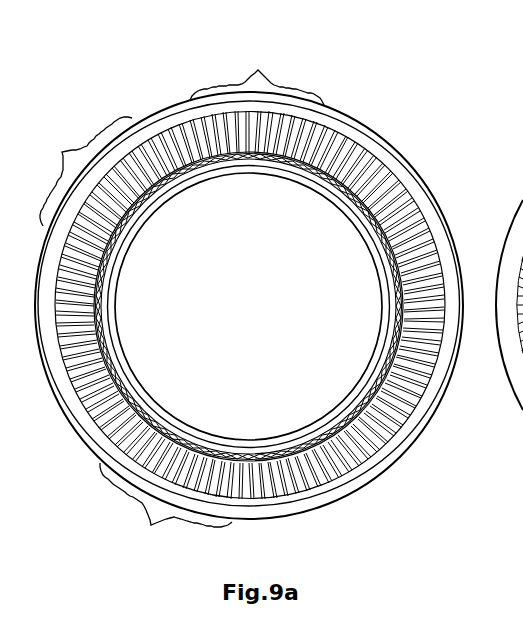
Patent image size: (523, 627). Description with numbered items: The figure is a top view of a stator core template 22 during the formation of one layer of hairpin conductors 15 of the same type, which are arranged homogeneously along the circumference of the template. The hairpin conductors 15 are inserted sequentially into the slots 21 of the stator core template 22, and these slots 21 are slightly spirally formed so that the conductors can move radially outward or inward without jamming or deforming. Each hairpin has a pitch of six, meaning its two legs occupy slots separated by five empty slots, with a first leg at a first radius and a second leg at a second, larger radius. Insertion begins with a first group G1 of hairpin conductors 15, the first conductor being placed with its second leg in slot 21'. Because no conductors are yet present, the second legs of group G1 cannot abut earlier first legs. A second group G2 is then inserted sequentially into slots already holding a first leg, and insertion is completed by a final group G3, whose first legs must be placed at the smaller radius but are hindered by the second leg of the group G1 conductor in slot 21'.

The hairpin conductors 15 is at (143, 197).
The slots 21 is at (250, 283).
The slot 21' is at (125, 105).
The stator core template 22 is at (375, 145).
The first group of hairpin conductors G1 is at (82, 171).
The second group of hairpin conductors G2 is at (166, 508).
The final group of hairpin conductors G3 is at (257, 76).